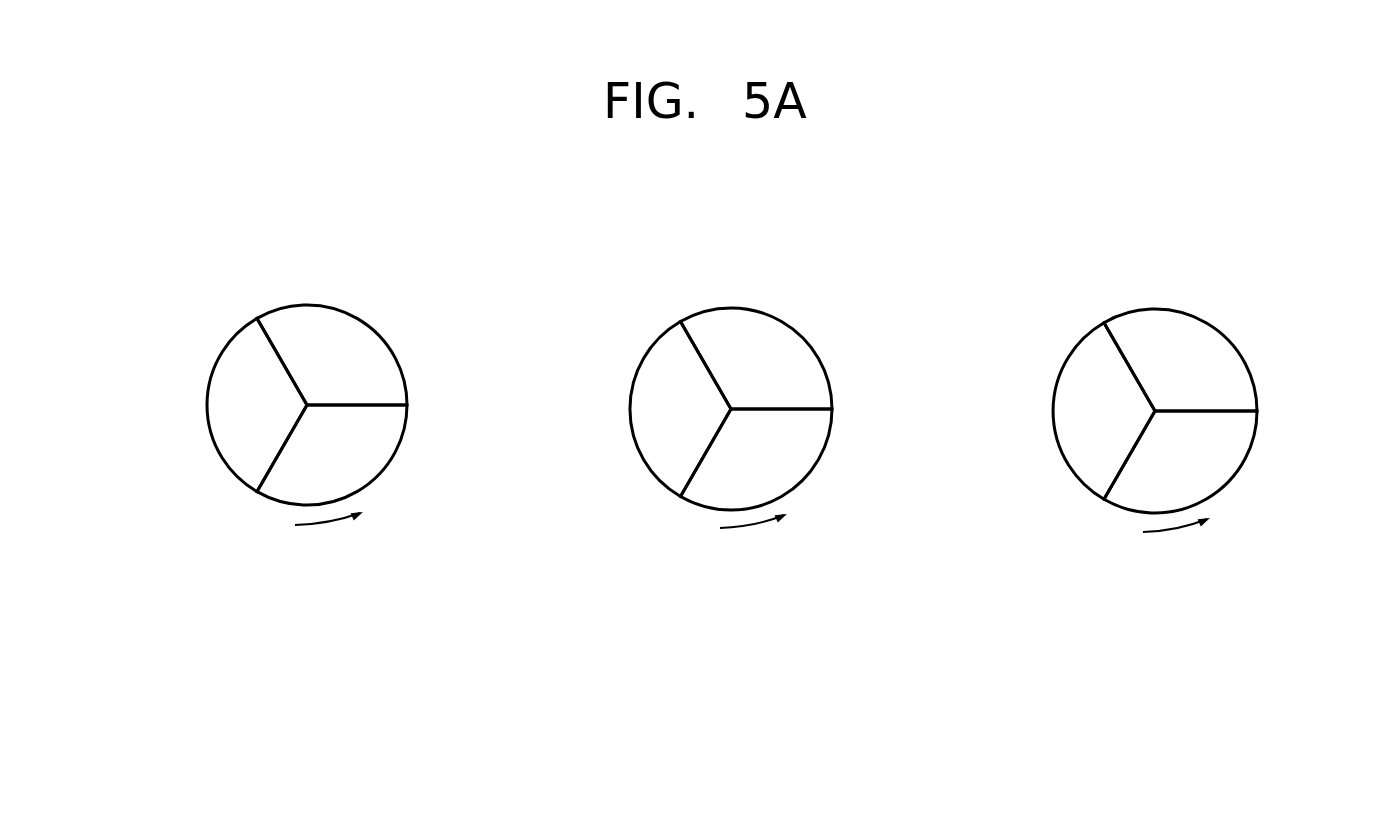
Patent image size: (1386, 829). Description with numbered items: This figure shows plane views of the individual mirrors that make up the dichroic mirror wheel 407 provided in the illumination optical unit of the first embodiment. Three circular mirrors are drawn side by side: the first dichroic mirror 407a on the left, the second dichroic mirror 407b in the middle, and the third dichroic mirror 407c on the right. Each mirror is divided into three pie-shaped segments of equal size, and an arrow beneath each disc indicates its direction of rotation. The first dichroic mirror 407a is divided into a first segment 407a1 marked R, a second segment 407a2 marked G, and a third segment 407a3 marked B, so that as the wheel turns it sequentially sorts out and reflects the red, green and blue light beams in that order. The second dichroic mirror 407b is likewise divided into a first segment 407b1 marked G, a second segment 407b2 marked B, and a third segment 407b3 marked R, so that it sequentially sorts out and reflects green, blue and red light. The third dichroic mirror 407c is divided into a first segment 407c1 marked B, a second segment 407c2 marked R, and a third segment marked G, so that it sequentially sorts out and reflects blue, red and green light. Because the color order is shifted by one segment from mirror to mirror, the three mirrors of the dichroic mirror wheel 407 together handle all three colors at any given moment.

The dichroic mirror wheel 407 is at (1153, 158).
The first dichroic mirror 407a is at (272, 290).
The first segment of the first dichroic mirror 407a1 is at (217, 392).
The second segment of the first dichroic mirror 407a2 is at (387, 435).
The third segment of the first dichroic mirror 407a3 is at (362, 333).
The second dichroic mirror 407b is at (694, 295).
The first segment of the second dichroic mirror 407b1 is at (642, 393).
The second segment of the second dichroic mirror 407b2 is at (813, 438).
The third segment of the second dichroic mirror 407b3 is at (785, 337).
The third dichroic mirror 407c is at (1117, 298).
The first segment of the third dichroic mirror 407c1 is at (1067, 395).
The second segment of the third dichroic mirror 407c2 is at (1235, 442).